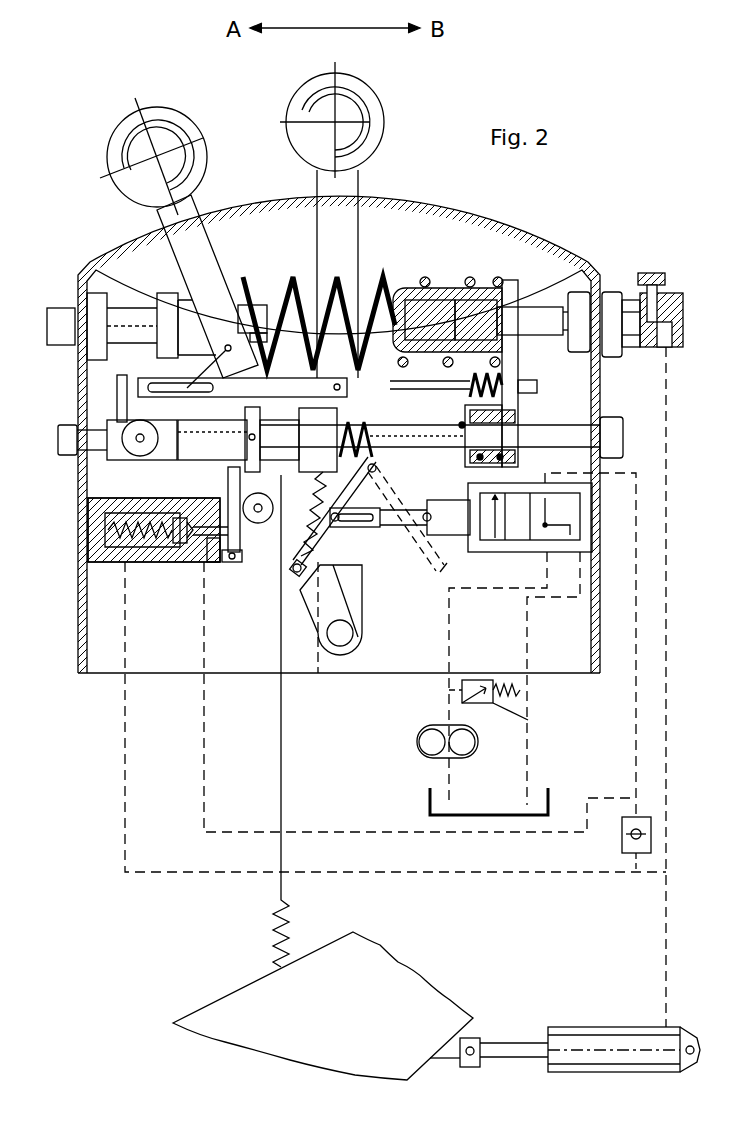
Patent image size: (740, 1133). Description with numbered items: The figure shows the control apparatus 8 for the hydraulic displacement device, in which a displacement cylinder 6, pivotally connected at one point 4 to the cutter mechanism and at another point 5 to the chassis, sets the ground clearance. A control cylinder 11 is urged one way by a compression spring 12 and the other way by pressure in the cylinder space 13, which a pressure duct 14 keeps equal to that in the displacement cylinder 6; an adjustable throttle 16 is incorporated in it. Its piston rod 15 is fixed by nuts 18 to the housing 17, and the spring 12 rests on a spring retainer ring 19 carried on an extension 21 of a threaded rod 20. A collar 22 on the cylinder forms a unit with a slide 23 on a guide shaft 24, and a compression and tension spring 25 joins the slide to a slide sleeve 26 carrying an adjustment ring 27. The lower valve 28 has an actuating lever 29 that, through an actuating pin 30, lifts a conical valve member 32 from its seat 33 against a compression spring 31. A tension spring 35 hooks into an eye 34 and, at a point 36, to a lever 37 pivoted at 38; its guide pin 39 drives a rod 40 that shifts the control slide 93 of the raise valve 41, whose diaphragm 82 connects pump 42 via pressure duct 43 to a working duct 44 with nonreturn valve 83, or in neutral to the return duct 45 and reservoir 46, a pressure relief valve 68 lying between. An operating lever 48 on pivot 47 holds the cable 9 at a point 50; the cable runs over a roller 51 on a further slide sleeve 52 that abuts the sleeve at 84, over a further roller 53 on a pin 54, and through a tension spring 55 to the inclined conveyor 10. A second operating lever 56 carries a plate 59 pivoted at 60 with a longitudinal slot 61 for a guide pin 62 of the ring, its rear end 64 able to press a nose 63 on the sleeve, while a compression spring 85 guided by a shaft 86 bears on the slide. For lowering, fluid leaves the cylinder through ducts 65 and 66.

The pivotal connection 4 is at (472, 1067).
The pivotal connection 5 is at (690, 1072).
The displacement cylinder 6 is at (622, 1072).
The control apparatus 8 is at (76, 268).
The cable 9 is at (281, 886).
The inclined conveyor 10 is at (250, 990).
The control cylinder 11 is at (443, 300).
The compression spring 12 is at (470, 277).
The cylinder space 13 is at (418, 315).
The pressure duct 14 is at (666, 775).
The piston rod 15 is at (531, 320).
The throttle 16 is at (618, 292).
The housing 17 is at (556, 258).
The nuts 18 is at (580, 295).
The spring retainer ring 19 is at (185, 300).
The threaded rod 20 is at (122, 320).
The extension 21 is at (243, 302).
The collar 22 is at (508, 280).
The slide 23 is at (514, 392).
The guide shaft 24 is at (600, 440).
The compression and tension spring 25 is at (487, 445).
The slide sleeve 26 is at (243, 450).
The adjustment ring 27 is at (279, 440).
The lower valve 28 is at (208, 560).
The actuating lever 29 is at (241, 534).
The actuating pin 30 is at (214, 555).
The compression spring 31 is at (105, 528).
The conical valve member 32 is at (165, 560).
The seat 33 is at (178, 512).
The eye 34 is at (320, 470).
The tension spring 35 is at (303, 552).
The hook point 36 is at (296, 572).
The lever 37 is at (340, 547).
The pivot 38 is at (380, 470).
The guide pin 39 is at (348, 527).
The rod 40 is at (412, 527).
The raise valve 41 is at (585, 550).
The pump 42 is at (417, 745).
The pressure duct 43 is at (449, 720).
The working duct 44 is at (636, 745).
The return duct 45 is at (527, 768).
The reservoir 46 is at (541, 815).
The pivot 47 is at (347, 640).
The operating lever 48 is at (192, 222).
The cable attachment point 50 is at (227, 345).
The roller 51 is at (113, 450).
The further slide sleeve 52 is at (68, 440).
The further roller 53 is at (258, 455).
The pin 54 is at (263, 507).
The tension spring 55 is at (277, 935).
The second operating lever 56 is at (362, 162).
The plate 59 is at (290, 292).
The pivotal connection 60 is at (356, 400).
The longitudinal slot 61 is at (212, 440).
The guide pin 62 is at (162, 384).
The nose 63 is at (117, 380).
The rear end 64 is at (140, 388).
The duct 65 is at (125, 858).
The duct 66 is at (204, 820).
The pressure relief valve 68 is at (520, 690).
The diaphragm 82 is at (578, 522).
The nonreturn valve 83 is at (651, 841).
The abutment 84 is at (146, 456).
The compression spring 85 is at (500, 383).
The shaft 86 is at (538, 387).
The control slide 93 is at (445, 565).